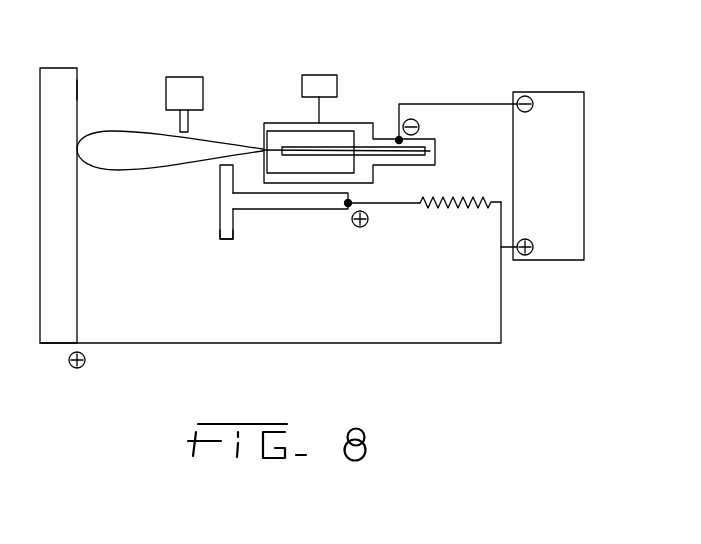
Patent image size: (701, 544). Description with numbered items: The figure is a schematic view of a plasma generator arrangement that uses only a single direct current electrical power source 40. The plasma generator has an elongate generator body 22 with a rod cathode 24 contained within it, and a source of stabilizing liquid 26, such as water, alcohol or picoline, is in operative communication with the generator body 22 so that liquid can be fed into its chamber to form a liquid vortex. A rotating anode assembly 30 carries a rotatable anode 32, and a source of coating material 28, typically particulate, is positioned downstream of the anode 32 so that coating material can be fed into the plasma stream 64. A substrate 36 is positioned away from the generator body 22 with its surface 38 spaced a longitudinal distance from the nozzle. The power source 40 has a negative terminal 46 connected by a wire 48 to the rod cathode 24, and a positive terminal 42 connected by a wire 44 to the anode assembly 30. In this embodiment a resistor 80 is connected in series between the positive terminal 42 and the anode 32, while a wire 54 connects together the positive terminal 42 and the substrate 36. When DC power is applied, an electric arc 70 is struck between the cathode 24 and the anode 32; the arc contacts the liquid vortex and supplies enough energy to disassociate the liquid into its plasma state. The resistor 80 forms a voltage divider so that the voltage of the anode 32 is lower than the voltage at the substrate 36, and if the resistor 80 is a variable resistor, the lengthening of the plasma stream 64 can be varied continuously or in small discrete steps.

The substrate 36 is at (66, 74).
The surface 38 is at (78, 92).
The source of coating material 28 is at (182, 90).
The source of stabilizing liquid 26 is at (313, 83).
The generator body 22 is at (350, 122).
The rod cathode 24 is at (425, 153).
The wire 48 is at (432, 103).
The negative terminal 46 is at (527, 95).
The DC power source 40 is at (567, 160).
The positive terminal 42 is at (530, 254).
The resistor 80 is at (455, 203).
The wire 44 is at (407, 204).
The plasma stream 64 is at (120, 170).
The electric arc 70 is at (236, 181).
The rotatable anode 32 is at (233, 228).
The rotating anode assembly 30 is at (306, 216).
The wire 54 is at (355, 343).